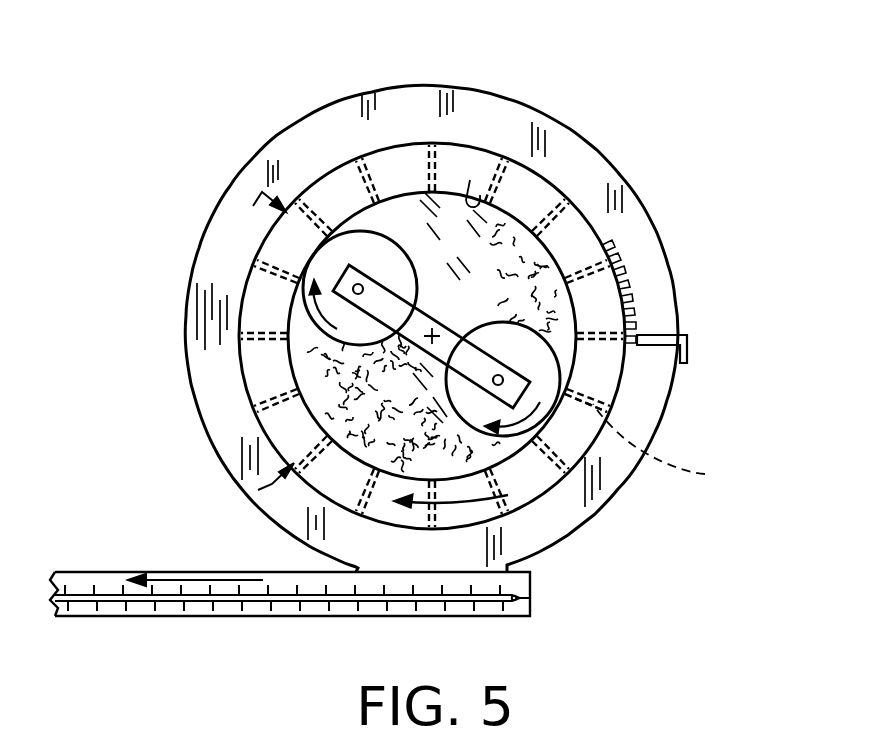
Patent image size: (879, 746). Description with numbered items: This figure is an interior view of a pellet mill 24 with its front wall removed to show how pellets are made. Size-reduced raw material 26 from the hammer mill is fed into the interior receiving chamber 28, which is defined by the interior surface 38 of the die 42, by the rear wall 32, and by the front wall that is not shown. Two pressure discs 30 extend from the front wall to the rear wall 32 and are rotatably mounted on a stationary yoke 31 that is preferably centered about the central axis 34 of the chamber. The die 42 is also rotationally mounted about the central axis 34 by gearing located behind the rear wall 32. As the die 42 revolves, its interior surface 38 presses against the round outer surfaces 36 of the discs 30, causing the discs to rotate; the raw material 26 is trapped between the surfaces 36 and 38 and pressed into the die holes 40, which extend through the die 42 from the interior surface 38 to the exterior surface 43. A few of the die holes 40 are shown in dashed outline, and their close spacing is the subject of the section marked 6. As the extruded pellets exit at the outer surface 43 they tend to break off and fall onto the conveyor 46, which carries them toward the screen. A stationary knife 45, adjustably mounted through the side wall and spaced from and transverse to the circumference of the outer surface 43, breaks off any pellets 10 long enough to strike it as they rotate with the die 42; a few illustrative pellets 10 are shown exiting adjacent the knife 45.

The section line 6 is at (277, 341).
The pellets 10 is at (620, 272).
The pellet mill 24 is at (545, 105).
The raw material 26 is at (252, 355).
The receiving chamber 28 is at (455, 300).
The pressure discs 30 is at (252, 161).
The stationary yoke 31 is at (395, 268).
The rear wall 32 is at (482, 193).
The central axis 34 is at (431, 343).
The outer surfaces 36 is at (340, 240).
The interior surface 38 is at (470, 180).
The die holes 40 is at (668, 447).
The die 42 is at (607, 395).
The exterior surface 43 is at (330, 172).
The stationary knife 45 is at (668, 331).
The conveyor 46 is at (120, 569).